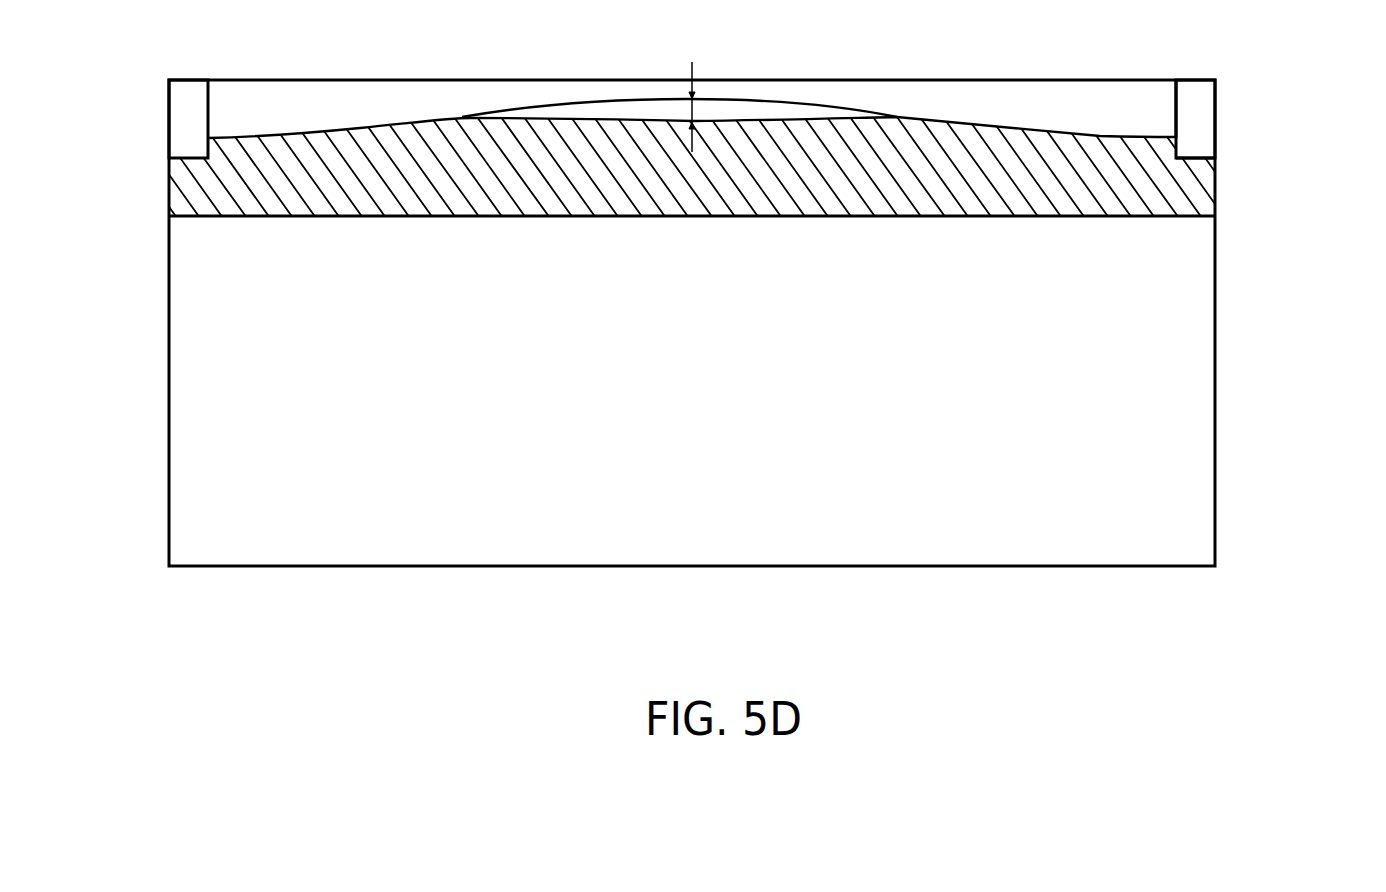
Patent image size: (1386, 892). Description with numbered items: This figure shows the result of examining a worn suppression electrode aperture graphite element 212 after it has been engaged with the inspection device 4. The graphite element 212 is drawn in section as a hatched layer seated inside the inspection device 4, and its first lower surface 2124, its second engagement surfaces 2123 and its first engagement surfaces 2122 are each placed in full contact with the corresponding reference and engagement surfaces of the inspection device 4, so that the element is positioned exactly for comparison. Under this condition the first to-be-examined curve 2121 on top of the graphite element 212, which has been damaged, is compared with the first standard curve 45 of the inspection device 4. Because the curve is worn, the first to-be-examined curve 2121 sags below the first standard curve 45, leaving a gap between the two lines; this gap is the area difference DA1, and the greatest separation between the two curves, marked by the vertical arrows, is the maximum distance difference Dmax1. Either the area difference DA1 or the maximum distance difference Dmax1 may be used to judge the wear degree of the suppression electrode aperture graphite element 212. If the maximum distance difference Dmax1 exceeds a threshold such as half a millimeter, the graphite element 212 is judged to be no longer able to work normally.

The inspection device 4 is at (1205, 468).
The suppression electrode aperture graphite element 212 is at (212, 187).
The first to-be-examined curve 2121 is at (818, 120).
The first standard curve 45 is at (755, 100).
The area difference DA1 is at (580, 110).
The maximum distance difference Dmax1 is at (690, 107).
The second engagement surfaces 2123 is at (1280, 101).
The first engagement surfaces 2122 is at (1280, 138).
The first lower surface 2124 is at (777, 267).